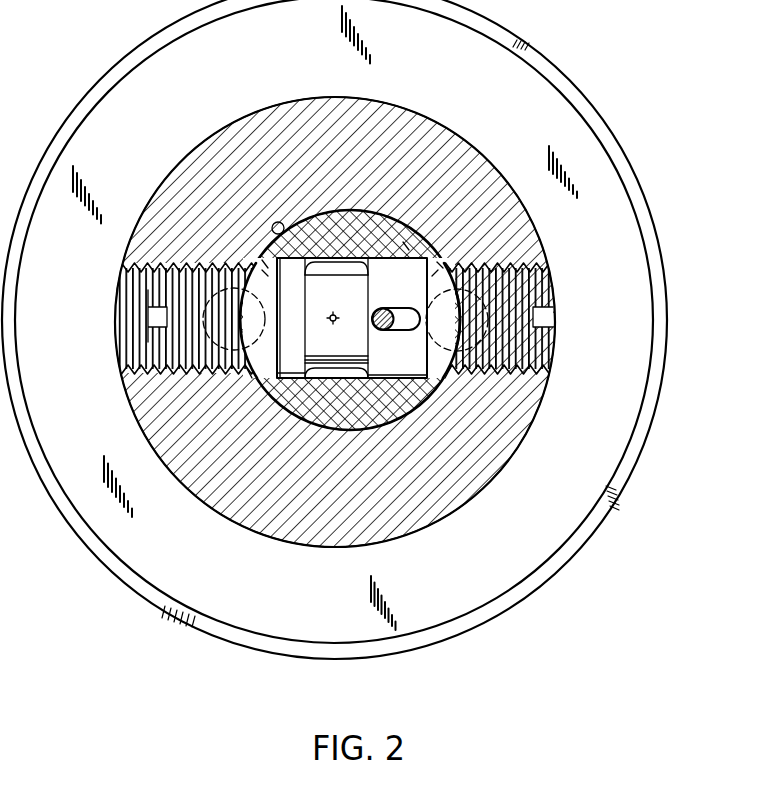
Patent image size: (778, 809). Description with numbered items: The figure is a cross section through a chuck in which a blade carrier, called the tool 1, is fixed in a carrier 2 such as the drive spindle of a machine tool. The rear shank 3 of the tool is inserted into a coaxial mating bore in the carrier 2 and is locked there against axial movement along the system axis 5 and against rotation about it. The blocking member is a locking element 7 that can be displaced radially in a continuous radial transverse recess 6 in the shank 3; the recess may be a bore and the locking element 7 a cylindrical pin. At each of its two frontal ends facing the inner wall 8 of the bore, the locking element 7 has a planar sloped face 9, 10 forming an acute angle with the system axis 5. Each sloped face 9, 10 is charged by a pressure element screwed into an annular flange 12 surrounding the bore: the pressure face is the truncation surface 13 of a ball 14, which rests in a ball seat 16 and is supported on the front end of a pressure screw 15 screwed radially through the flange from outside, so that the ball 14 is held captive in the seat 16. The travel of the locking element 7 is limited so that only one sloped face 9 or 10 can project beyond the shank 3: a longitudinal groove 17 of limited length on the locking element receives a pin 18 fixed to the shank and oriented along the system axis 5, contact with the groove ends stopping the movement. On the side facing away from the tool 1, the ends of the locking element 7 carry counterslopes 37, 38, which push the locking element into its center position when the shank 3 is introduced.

The tool 1 is at (558, 62).
The carrier 2 is at (246, 108).
The shank 3 is at (376, 412).
The system axis 5 is at (331, 314).
The transverse recess 6 is at (346, 266).
The locking element 7 is at (406, 240).
The inner wall 8 is at (278, 222).
The sloped face 9 is at (266, 262).
The sloped face 10 is at (440, 262).
The annular flange 12 is at (291, 108).
The truncation surface 13 is at (440, 306).
The ball 14 is at (250, 272).
The pressure screw 15 is at (160, 296).
The ball seat 16 is at (508, 300).
The longitudinal groove 17 is at (376, 314).
The pin 18 is at (376, 322).
The counterslope 37 is at (244, 372).
The counterslope 38 is at (437, 372).